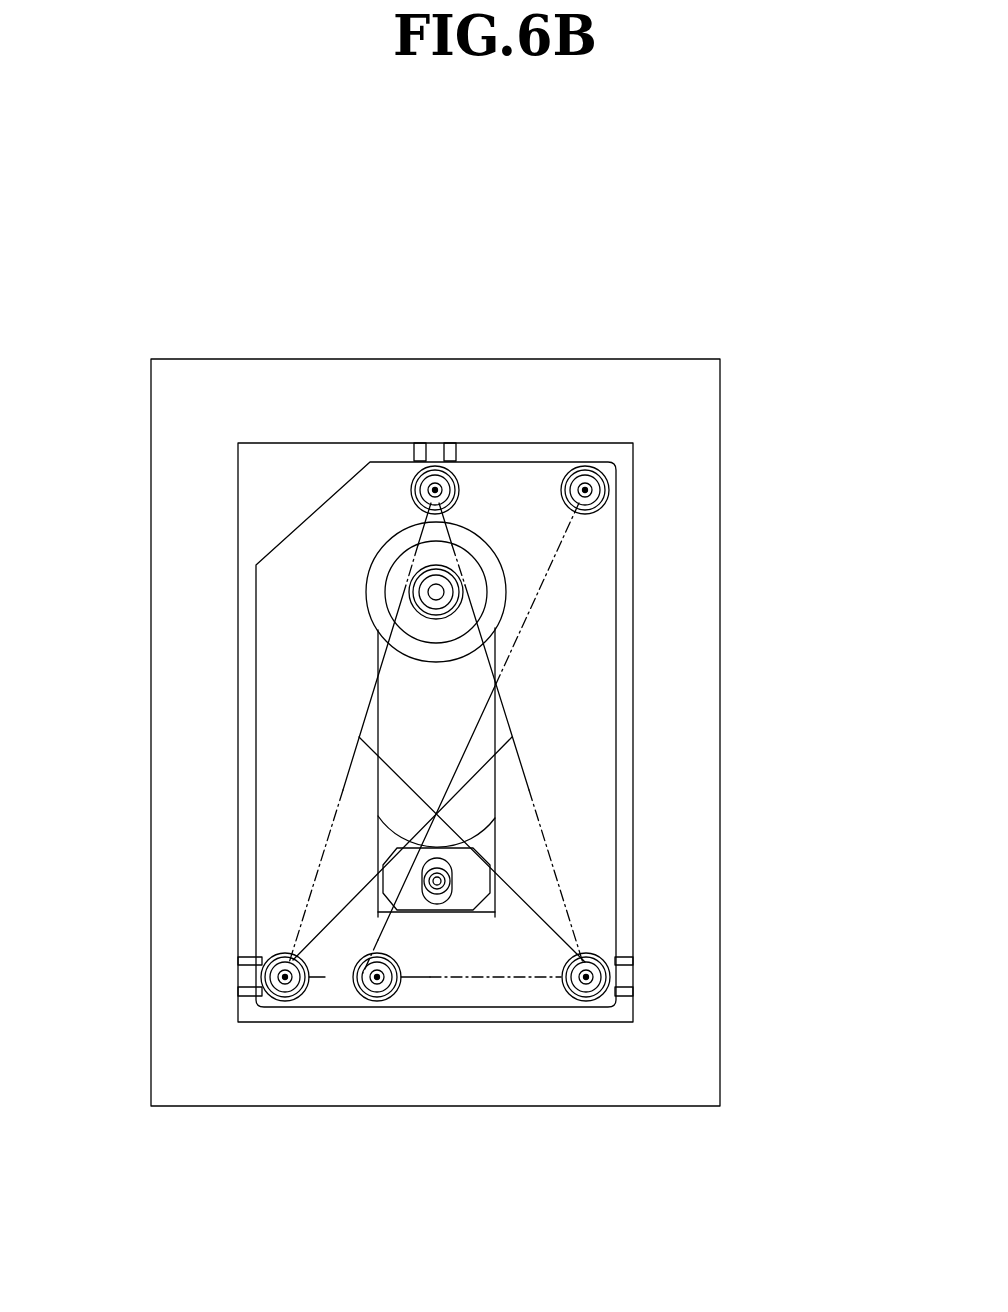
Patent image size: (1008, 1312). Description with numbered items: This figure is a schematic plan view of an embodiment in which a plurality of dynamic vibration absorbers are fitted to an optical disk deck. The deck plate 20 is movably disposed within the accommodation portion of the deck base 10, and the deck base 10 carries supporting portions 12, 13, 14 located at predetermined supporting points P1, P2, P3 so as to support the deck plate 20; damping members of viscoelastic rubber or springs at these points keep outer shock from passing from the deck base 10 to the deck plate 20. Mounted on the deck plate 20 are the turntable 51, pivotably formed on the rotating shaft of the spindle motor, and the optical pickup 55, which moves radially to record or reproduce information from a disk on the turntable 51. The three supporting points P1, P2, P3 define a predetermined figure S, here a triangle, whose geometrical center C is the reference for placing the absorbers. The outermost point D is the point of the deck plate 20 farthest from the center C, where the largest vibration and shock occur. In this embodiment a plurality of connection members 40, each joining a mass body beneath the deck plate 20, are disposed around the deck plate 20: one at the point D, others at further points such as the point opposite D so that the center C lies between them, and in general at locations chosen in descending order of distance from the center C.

The deck base 10 is at (695, 427).
The deck plate 20 is at (590, 683).
The supporting portion 12 is at (420, 443).
The supporting portion 13 is at (240, 958).
The supporting portion 14 is at (627, 960).
The connection member 40 is at (583, 732).
The turntable 51 is at (380, 557).
The optical pickup 55 is at (473, 885).
The supporting point P1 is at (450, 480).
The supporting point P2 is at (292, 1001).
The supporting point P3 is at (592, 1001).
The outermost point D is at (580, 480).
The geometrical center C is at (437, 813).
The predetermined figure S is at (437, 980).